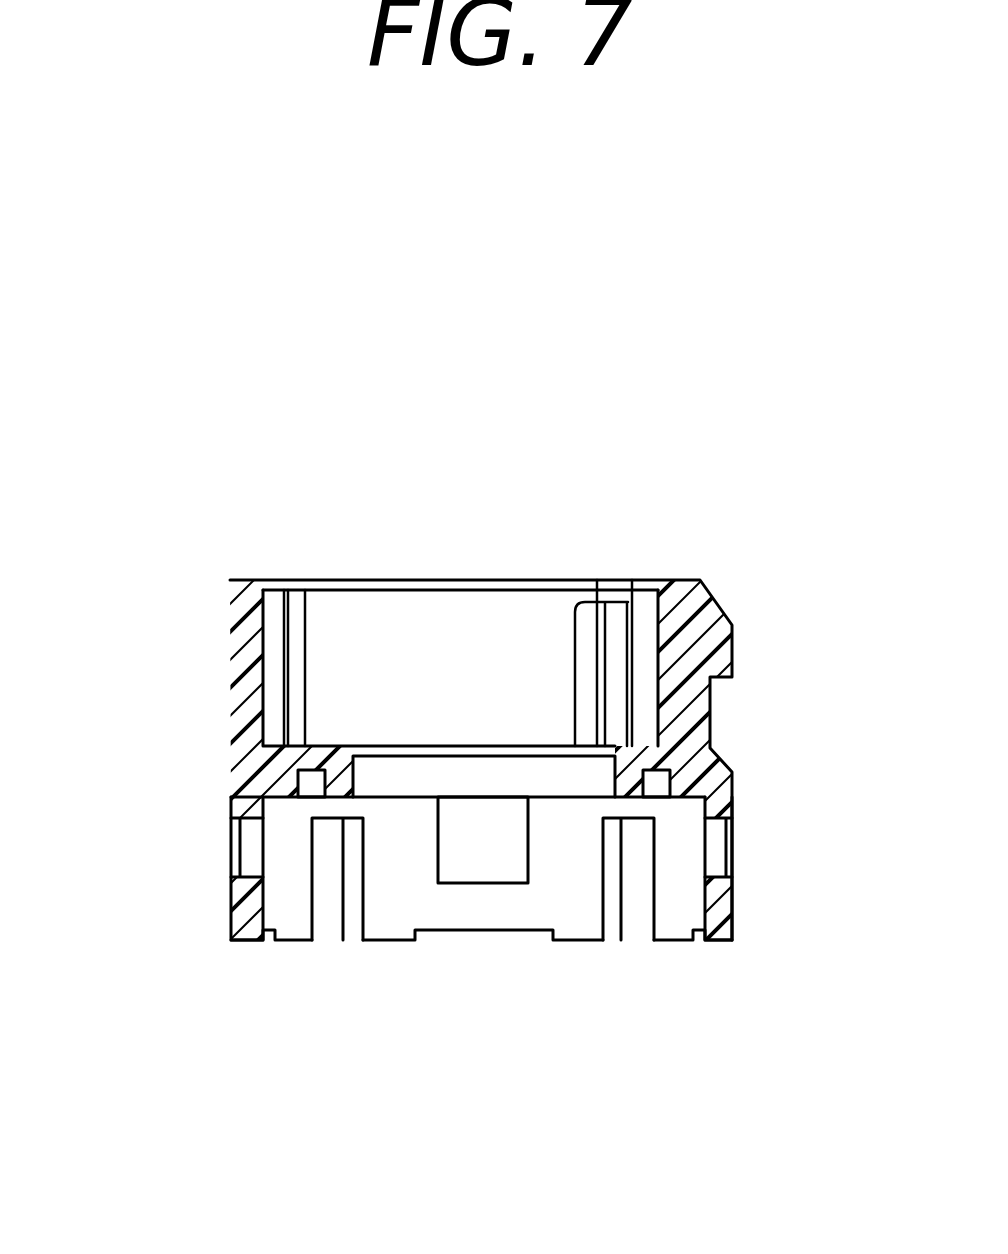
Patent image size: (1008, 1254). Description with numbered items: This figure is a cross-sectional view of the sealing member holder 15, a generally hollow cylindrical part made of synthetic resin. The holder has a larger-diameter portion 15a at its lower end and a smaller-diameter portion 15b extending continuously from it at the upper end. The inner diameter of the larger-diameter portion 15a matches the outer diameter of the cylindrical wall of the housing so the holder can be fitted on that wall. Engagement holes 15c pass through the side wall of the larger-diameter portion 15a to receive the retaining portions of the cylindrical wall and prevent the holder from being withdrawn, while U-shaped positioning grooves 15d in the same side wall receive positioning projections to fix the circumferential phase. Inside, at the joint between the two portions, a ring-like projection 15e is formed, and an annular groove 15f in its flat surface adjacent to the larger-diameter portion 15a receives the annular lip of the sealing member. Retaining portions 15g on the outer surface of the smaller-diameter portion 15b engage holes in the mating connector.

The sealing member holder 15 is at (546, 627).
The larger-diameter portion 15a is at (232, 925).
The smaller-diameter portion 15b is at (232, 621).
The engagement holes 15c is at (248, 850).
The positioning grooves 15d is at (325, 921).
The ring-like projection 15e is at (300, 745).
The annular groove 15f is at (310, 785).
The retaining portions 15g is at (733, 654).